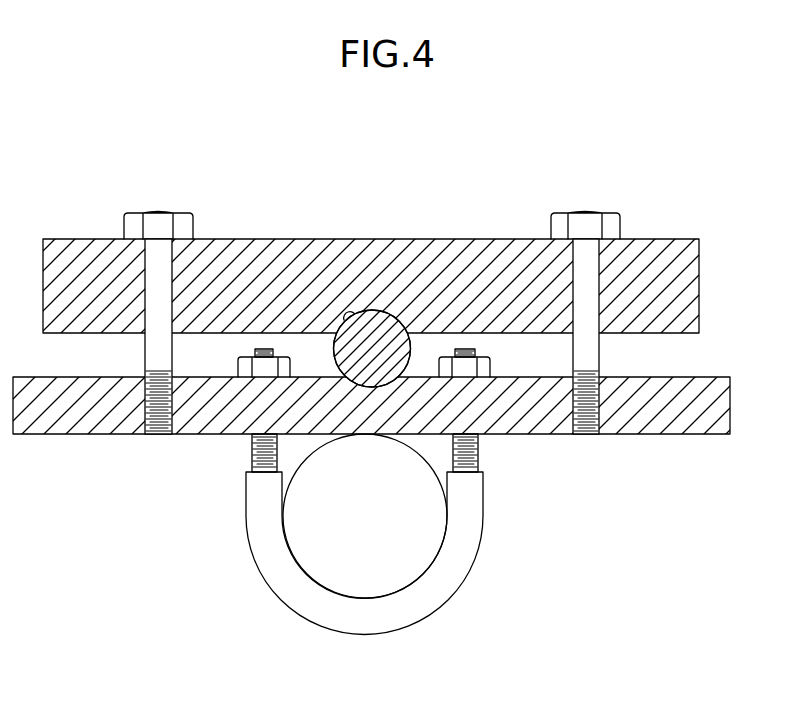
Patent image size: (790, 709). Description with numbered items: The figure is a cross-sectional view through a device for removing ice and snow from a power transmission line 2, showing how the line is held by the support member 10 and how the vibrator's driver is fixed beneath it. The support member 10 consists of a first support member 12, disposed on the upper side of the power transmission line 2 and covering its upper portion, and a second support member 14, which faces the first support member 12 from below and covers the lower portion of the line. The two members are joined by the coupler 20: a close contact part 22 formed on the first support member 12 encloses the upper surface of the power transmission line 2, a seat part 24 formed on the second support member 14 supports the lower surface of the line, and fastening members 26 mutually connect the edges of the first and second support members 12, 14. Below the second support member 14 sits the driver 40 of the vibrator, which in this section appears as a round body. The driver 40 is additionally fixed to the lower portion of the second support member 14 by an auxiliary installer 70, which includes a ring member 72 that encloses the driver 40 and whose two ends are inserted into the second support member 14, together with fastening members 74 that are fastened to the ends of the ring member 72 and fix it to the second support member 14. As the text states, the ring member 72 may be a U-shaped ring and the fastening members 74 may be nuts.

The power transmission line 2 is at (402, 313).
The support member 10 is at (371, 296).
The first support member 12 is at (453, 250).
The second support member 14 is at (523, 382).
The coupler 20 is at (372, 300).
The close contact part 22 is at (342, 319).
The seat part 24 is at (372, 387).
The fastening member 26 is at (187, 226).
The driver 40 is at (390, 572).
The auxiliary installer 70 is at (407, 492).
The ring member 72 is at (543, 452).
The fastening member 74 is at (484, 370).